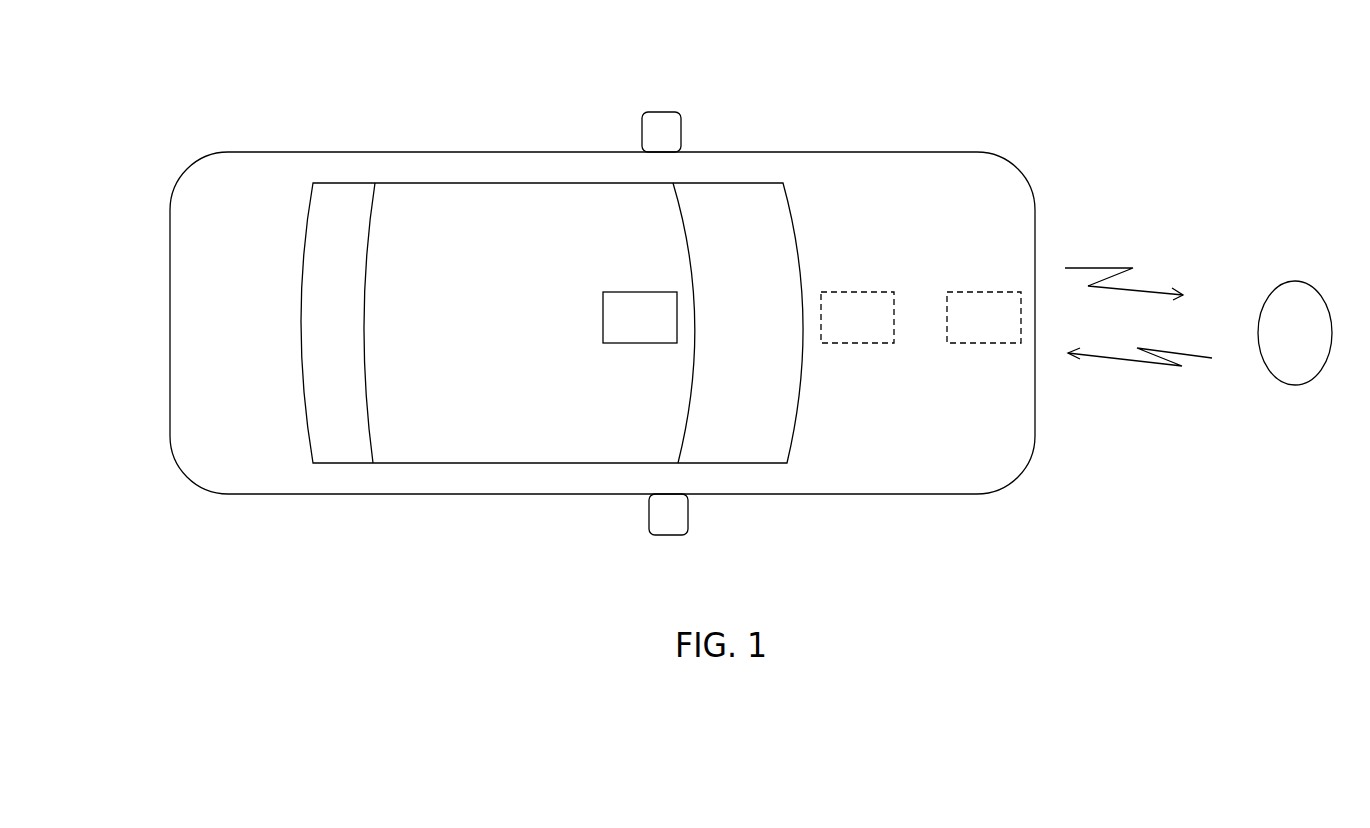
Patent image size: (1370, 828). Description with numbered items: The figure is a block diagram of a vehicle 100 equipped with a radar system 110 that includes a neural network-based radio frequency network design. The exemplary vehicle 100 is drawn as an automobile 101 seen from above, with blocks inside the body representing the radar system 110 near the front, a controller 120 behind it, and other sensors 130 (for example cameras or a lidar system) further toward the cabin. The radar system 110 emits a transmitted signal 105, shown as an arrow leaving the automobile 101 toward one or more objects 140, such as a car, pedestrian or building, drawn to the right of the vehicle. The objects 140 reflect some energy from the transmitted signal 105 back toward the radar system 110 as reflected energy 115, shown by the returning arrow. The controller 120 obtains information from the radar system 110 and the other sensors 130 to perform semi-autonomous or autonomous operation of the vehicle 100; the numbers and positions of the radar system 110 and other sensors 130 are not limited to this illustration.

The vehicle 100 is at (602, 308).
The automobile 101 is at (337, 152).
The transmitted signal 105 is at (1124, 263).
The radar system 110 is at (1008, 332).
The reflected energy 115 is at (1140, 387).
The controller 120 is at (881, 332).
The other sensors 130 is at (664, 332).
The objects 140 is at (1318, 348).